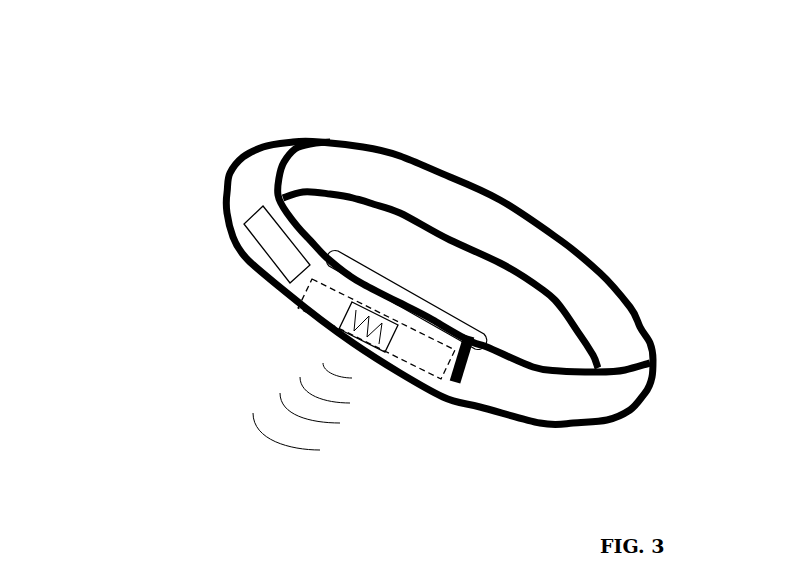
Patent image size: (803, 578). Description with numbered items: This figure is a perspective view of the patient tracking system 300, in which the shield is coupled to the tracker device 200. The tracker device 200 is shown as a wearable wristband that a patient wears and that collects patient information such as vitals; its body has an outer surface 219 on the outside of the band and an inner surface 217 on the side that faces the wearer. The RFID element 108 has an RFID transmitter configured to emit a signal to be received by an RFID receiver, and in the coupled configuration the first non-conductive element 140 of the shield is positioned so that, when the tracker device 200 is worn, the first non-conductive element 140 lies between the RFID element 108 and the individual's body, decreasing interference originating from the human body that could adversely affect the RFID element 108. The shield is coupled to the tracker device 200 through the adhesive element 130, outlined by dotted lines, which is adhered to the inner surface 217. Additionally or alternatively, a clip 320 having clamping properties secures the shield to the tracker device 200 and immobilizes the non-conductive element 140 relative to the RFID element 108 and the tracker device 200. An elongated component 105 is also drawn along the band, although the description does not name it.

The patient tracking system 300 is at (372, 248).
The tracker device 200 is at (236, 178).
The sensor module 105 is at (340, 250).
The first non-conductive element 140 is at (410, 305).
The clip 320 is at (530, 333).
The inner surface 217 is at (622, 318).
The outer surface 219 is at (585, 406).
The adhesive element 130 is at (310, 285).
The RFID element 108 is at (390, 354).